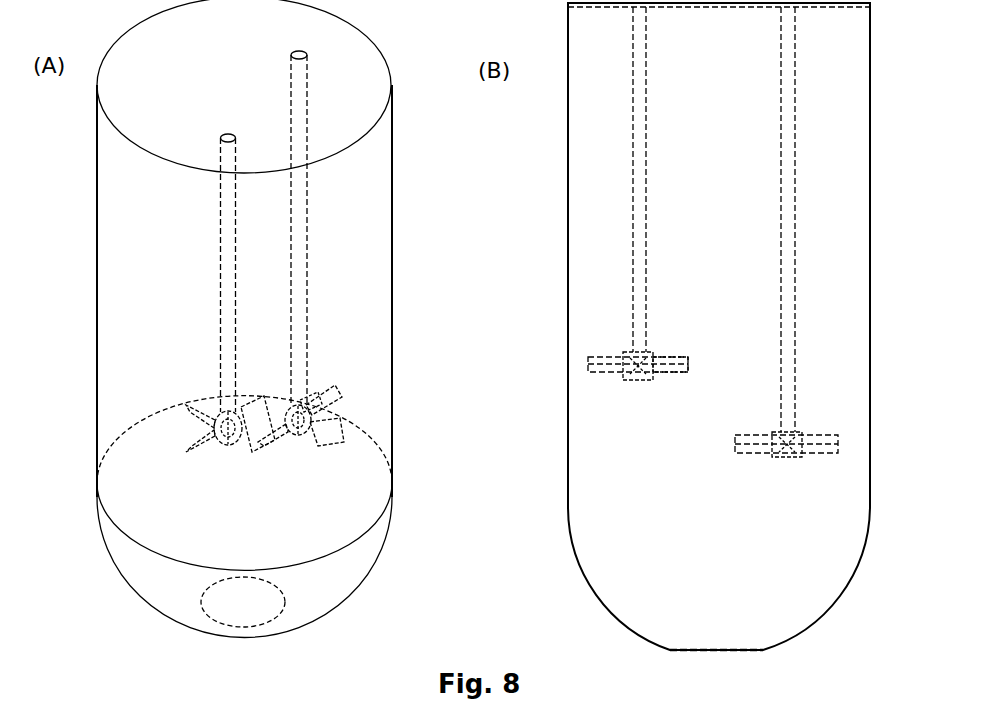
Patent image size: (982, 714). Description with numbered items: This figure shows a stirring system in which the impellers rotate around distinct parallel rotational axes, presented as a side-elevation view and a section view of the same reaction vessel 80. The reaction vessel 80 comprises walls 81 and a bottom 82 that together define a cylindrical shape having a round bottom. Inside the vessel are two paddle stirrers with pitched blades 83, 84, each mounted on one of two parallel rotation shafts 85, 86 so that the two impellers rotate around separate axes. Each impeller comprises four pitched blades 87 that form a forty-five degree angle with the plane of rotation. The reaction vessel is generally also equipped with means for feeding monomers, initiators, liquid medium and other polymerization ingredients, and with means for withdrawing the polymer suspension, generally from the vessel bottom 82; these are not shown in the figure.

The reaction vessel 80 is at (503, 325).
The walls 81 is at (294, 406).
The bottom 82 is at (482, 619).
The paddle stirrer with pitched blades 83 is at (414, 402).
The paddle stirrer with pitched blades 84 is at (548, 438).
The rotation shaft 85 is at (433, 209).
The rotation shaft 86 is at (562, 219).
The pitched blades 87 is at (303, 397).